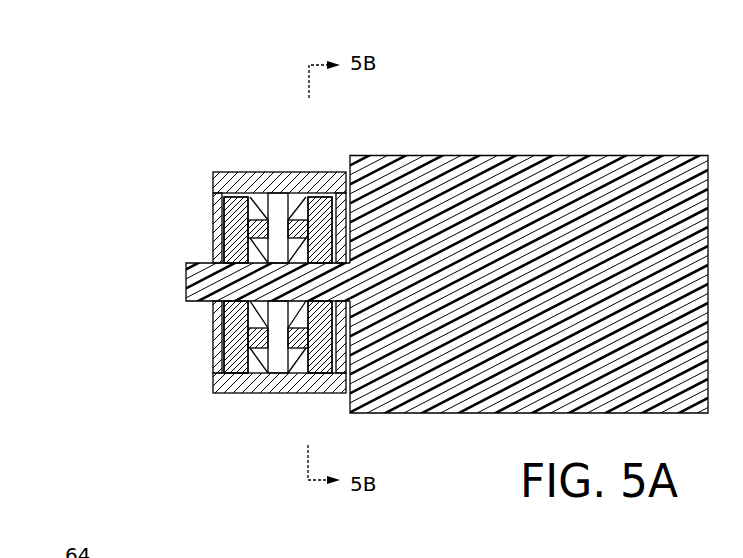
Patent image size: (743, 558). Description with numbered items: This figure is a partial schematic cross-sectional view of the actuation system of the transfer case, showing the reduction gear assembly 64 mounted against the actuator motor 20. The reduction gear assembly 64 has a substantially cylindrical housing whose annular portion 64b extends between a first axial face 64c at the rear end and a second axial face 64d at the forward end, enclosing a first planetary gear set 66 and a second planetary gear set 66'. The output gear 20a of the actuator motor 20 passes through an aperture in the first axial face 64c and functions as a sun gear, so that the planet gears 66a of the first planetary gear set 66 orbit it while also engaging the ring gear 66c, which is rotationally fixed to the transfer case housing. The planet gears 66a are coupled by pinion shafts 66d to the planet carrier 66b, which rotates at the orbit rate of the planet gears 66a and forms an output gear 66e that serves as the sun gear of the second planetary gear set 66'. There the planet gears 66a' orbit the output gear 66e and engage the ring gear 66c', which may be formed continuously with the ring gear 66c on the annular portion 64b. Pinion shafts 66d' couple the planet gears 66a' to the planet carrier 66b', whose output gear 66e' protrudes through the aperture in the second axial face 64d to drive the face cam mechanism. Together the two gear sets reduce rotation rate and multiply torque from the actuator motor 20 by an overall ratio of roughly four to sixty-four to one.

The actuator motor 20 is at (545, 155).
The output gear 20a is at (343, 285).
The reduction gear assembly 64 is at (128, 132).
The annular portion 64b is at (213, 173).
The first axial face 64c is at (353, 155).
The second axial face 64d is at (213, 212).
The first planetary gear set 66 is at (309, 242).
The second planetary gear set 66' is at (245, 242).
The planet gears 66a is at (351, 390).
The planet carrier 66b is at (286, 397).
The ring gear 66c is at (311, 321).
The pinion shafts 66d is at (382, 323).
The output gear 66e is at (199, 297).
The planet gears 66a' is at (233, 395).
The planet carrier 66b' is at (210, 389).
The ring gear 66c' is at (269, 402).
The pinion shafts 66d' is at (174, 323).
The output gear 66e' is at (176, 261).